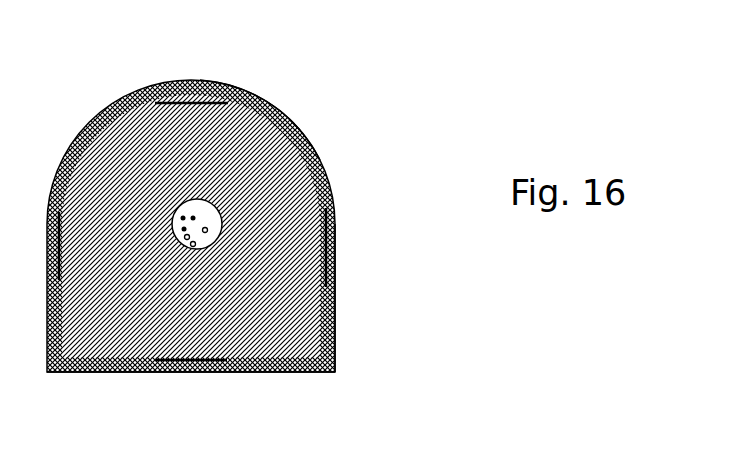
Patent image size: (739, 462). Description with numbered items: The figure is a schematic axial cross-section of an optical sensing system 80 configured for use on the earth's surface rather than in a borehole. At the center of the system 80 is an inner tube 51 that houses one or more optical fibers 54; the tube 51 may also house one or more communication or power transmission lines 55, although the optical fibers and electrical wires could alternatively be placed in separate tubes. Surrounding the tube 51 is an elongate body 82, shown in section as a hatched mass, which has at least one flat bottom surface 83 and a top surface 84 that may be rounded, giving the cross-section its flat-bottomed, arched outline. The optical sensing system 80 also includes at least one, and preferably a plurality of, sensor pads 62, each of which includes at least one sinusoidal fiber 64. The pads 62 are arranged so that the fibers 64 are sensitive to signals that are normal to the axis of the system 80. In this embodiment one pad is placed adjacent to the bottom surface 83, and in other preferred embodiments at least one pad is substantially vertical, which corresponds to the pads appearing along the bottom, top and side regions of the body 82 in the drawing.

The optical sensing system 80 is at (183, 56).
The elongate body 82 is at (290, 119).
The top surface 84 is at (302, 131).
The sensor pad 62 is at (336, 220).
The sinusoidal fiber 64 is at (336, 255).
The flat bottom surface 83 is at (270, 372).
The optical fiber 54 is at (176, 202).
The inner tube 51 is at (219, 206).
The communication or power transmission line 55 is at (207, 232).